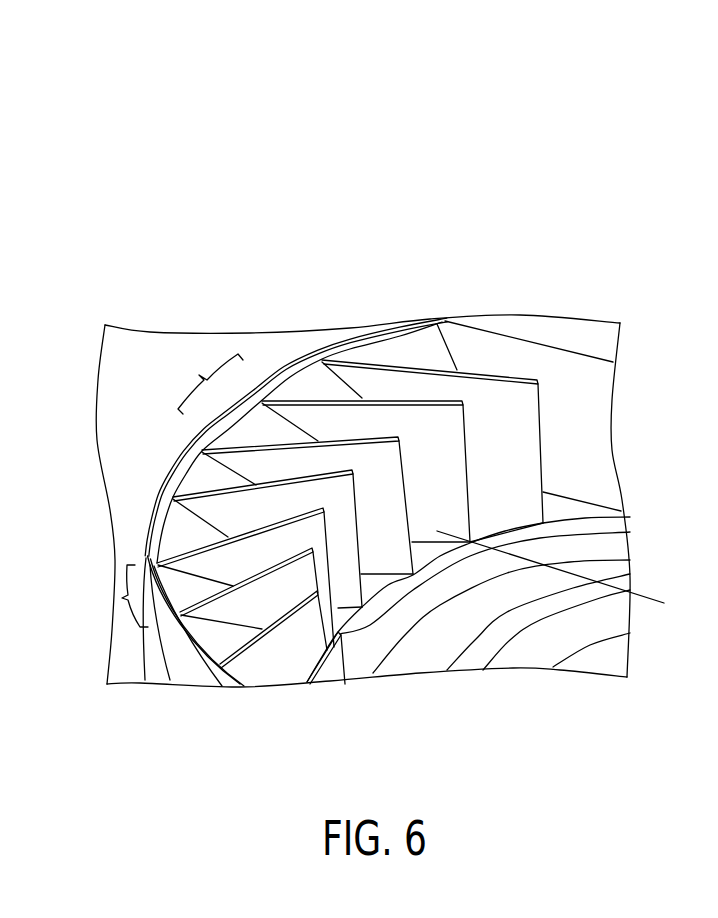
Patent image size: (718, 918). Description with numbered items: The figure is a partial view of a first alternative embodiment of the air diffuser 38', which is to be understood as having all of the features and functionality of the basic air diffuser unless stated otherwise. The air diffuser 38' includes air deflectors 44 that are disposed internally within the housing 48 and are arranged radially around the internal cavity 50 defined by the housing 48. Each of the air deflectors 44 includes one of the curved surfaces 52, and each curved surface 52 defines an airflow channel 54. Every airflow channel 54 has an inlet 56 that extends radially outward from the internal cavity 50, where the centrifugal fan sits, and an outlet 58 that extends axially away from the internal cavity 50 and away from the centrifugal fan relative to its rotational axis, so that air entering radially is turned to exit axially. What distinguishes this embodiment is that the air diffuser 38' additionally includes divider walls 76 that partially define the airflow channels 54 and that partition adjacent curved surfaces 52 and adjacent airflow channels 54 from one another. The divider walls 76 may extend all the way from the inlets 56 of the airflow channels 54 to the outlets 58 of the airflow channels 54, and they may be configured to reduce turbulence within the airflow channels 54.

The air diffuser 38' is at (84, 80).
The air deflectors 44 is at (170, 524).
The housing 48 is at (420, 682).
The internal cavity 50 is at (589, 664).
The curved surfaces 52 is at (250, 418).
The airflow channel 54 is at (173, 486).
The inlet 56 is at (562, 576).
The outlet 58 is at (331, 343).
The divider walls 76 is at (428, 433).